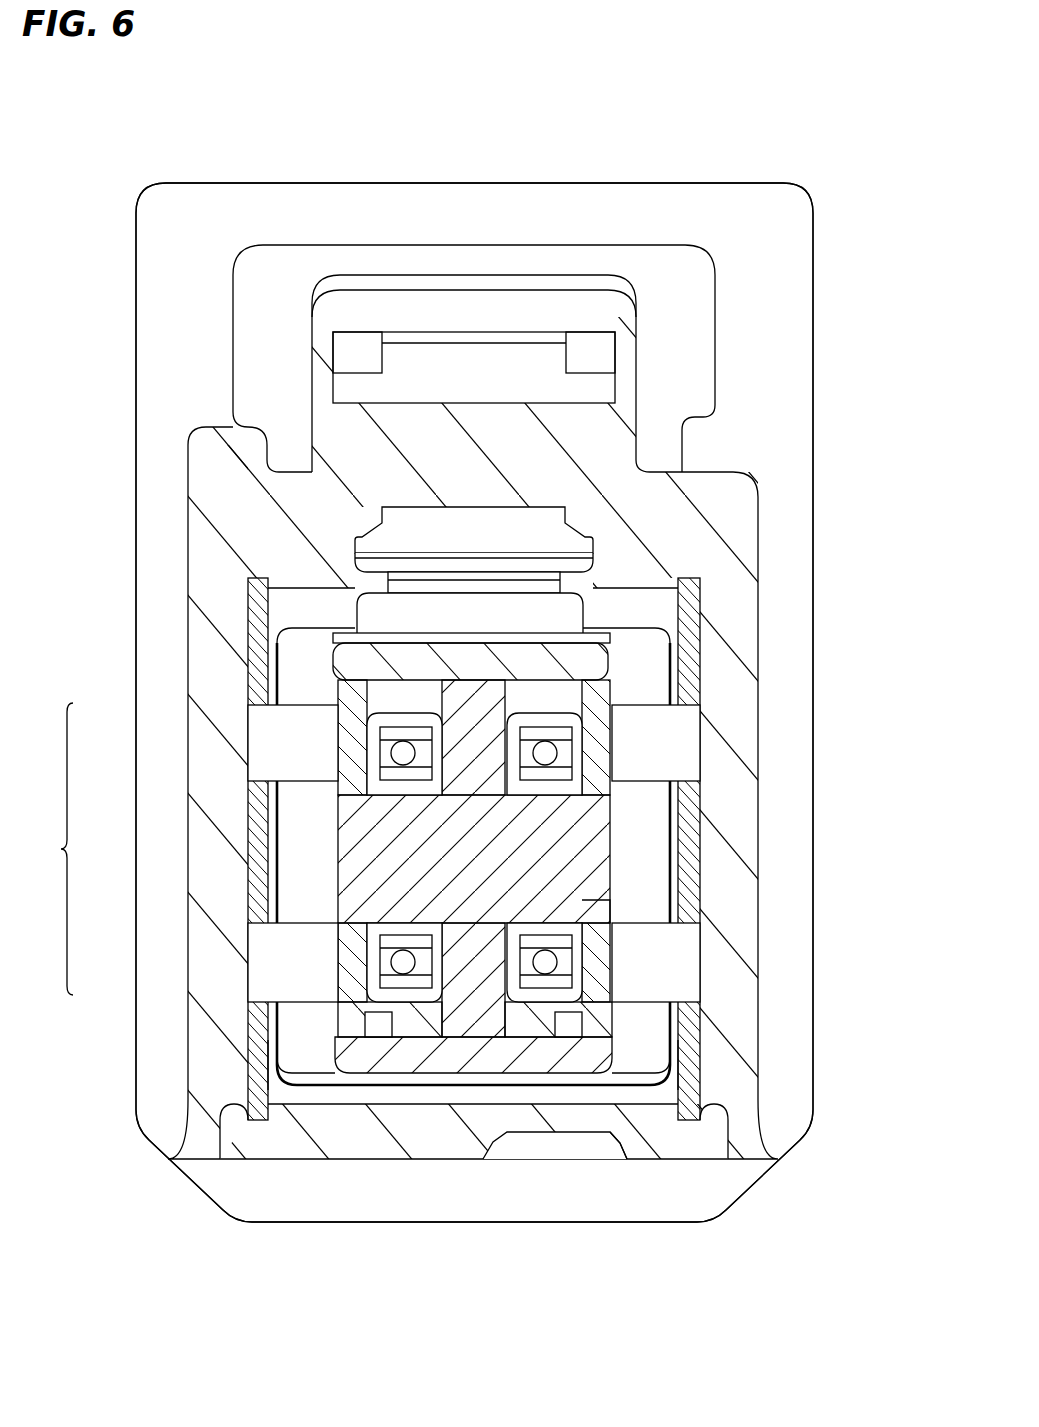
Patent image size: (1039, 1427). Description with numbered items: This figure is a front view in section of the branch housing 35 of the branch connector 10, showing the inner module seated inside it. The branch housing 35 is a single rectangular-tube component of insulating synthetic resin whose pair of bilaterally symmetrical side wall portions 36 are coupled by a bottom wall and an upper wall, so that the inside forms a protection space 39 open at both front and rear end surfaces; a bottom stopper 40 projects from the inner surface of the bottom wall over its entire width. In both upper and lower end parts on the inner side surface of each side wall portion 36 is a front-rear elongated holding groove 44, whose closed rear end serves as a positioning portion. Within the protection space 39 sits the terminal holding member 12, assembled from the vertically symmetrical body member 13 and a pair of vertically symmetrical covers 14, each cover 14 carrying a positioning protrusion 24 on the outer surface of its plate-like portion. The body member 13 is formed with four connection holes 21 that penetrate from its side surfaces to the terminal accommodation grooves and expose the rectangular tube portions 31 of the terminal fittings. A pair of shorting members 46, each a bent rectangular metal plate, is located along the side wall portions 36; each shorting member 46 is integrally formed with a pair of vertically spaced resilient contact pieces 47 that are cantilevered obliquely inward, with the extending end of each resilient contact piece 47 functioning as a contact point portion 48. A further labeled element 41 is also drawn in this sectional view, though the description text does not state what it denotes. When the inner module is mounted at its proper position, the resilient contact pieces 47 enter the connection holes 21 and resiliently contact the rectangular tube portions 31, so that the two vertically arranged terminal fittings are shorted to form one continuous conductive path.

The branch connector 10 is at (816, 115).
The terminal holding member 12 is at (322, 853).
The body member 13 is at (368, 853).
The cover 14 is at (367, 666).
The connection hole 21 is at (412, 738).
The positioning protrusion 24 is at (485, 610).
The rectangular tube portion 31 is at (575, 720).
The branch housing 35 is at (737, 1124).
The side wall portion 36 is at (205, 638).
The protection space 39 is at (625, 1100).
The bottom stopper 40 is at (486, 1094).
The cap 41 is at (315, 600).
The holding groove 44 is at (247, 600).
The shorting member 46 is at (257, 1067).
The resilient contact piece 47 is at (632, 727).
The contact point portion 48 is at (562, 920).